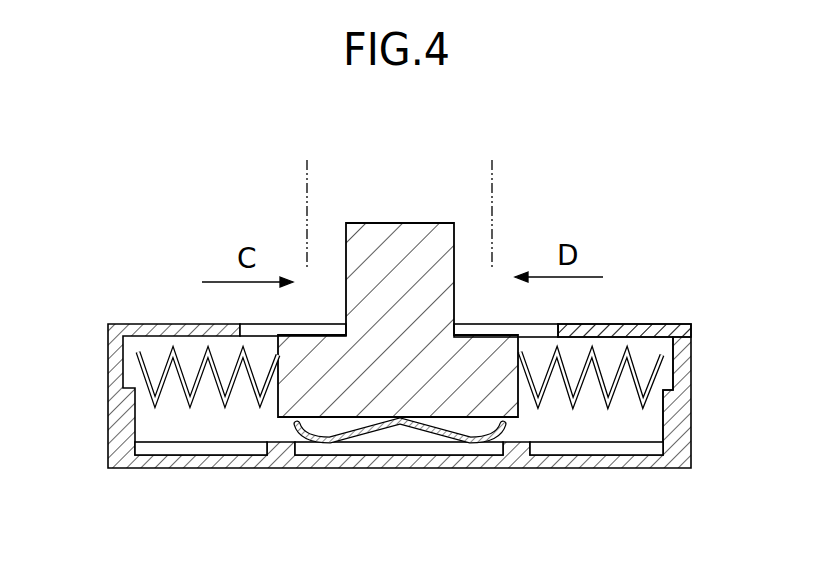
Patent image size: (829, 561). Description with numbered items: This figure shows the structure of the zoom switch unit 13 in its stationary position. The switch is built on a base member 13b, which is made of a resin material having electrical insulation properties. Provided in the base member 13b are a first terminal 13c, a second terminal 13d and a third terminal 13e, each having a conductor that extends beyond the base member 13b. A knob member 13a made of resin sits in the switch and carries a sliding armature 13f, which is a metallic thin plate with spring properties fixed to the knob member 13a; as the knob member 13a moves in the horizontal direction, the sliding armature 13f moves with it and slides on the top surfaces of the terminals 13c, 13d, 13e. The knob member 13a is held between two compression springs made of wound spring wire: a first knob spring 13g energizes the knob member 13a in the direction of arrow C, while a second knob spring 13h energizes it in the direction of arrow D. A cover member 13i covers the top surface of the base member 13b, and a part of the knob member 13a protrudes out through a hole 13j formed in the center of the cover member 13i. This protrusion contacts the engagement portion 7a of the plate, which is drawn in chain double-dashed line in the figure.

The zoom switch unit 13 is at (119, 318).
The knob member 13a is at (407, 228).
The base member 13b is at (690, 423).
The first terminal 13c is at (330, 452).
The second terminal 13d is at (173, 452).
The third terminal 13e is at (576, 452).
The sliding armature 13f is at (422, 430).
The first knob spring 13g is at (188, 398).
The second knob spring 13h is at (613, 410).
The cover member 13i is at (642, 326).
The hole 13j is at (487, 328).
The engagement portion 7a is at (309, 178).